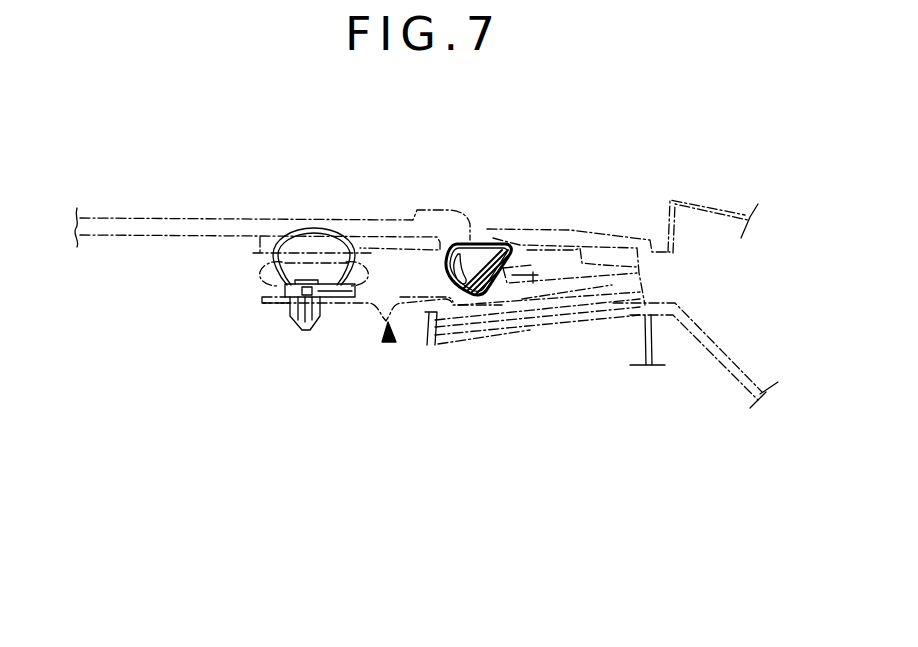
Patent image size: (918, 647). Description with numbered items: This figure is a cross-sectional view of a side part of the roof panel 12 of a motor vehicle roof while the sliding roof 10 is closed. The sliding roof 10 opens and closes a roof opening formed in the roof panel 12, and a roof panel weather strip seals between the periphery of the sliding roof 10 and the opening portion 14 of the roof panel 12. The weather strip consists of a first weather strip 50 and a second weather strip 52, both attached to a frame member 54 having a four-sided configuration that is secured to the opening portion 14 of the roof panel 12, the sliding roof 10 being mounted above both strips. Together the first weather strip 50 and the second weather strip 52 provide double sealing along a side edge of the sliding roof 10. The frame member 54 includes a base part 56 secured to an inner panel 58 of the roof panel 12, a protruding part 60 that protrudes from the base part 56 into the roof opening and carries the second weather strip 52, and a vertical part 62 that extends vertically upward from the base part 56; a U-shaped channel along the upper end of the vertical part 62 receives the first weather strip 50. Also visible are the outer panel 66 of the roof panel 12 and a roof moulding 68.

The sliding roof 10 is at (165, 217).
The roof panel 12 is at (740, 382).
The opening portion 14 is at (426, 340).
The first weather strip 50 is at (475, 242).
The second weather strip 52 is at (273, 290).
The frame member 54 is at (394, 342).
The base part 56 is at (540, 302).
The inner panel 58 is at (712, 355).
The protruding part 60 is at (382, 320).
The vertical part 62 is at (510, 248).
The outer panel 66 is at (713, 205).
The roof moulding 68 is at (585, 230).